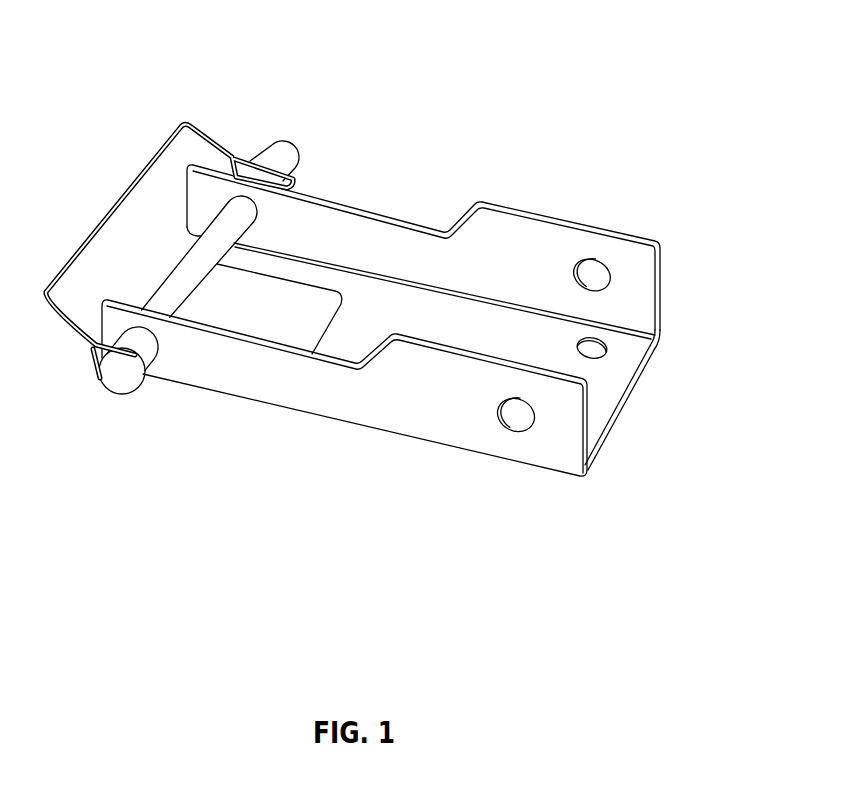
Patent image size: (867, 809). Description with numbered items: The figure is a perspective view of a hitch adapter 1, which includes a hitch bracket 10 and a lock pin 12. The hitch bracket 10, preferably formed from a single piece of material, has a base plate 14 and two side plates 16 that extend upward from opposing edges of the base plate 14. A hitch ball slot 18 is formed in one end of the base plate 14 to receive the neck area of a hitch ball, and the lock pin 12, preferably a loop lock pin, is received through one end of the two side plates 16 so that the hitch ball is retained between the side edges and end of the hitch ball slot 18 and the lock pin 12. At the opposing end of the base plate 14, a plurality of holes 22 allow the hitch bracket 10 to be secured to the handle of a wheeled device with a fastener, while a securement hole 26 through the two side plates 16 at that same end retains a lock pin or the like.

The hitch adapter 1 is at (415, 306).
The hitch bracket 10 is at (443, 343).
The lock pin 12 is at (122, 380).
The base plate 14 is at (605, 390).
The side plates 16 is at (660, 273).
The hitch ball slot 18 is at (275, 322).
The holes 22 is at (608, 345).
The securement hole 26 is at (588, 257).